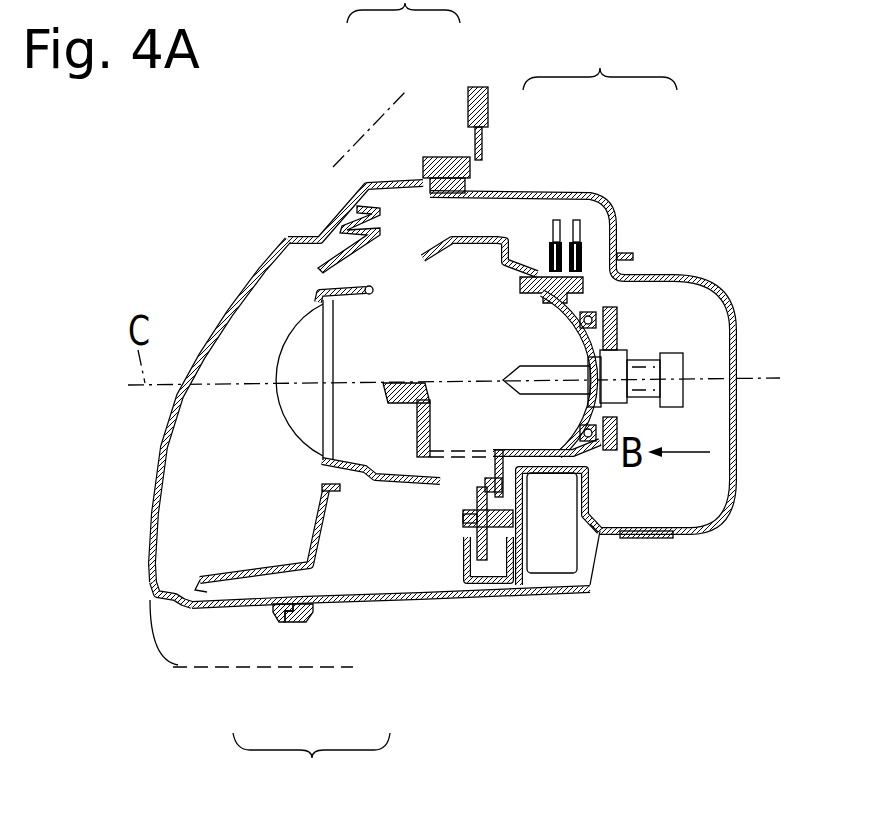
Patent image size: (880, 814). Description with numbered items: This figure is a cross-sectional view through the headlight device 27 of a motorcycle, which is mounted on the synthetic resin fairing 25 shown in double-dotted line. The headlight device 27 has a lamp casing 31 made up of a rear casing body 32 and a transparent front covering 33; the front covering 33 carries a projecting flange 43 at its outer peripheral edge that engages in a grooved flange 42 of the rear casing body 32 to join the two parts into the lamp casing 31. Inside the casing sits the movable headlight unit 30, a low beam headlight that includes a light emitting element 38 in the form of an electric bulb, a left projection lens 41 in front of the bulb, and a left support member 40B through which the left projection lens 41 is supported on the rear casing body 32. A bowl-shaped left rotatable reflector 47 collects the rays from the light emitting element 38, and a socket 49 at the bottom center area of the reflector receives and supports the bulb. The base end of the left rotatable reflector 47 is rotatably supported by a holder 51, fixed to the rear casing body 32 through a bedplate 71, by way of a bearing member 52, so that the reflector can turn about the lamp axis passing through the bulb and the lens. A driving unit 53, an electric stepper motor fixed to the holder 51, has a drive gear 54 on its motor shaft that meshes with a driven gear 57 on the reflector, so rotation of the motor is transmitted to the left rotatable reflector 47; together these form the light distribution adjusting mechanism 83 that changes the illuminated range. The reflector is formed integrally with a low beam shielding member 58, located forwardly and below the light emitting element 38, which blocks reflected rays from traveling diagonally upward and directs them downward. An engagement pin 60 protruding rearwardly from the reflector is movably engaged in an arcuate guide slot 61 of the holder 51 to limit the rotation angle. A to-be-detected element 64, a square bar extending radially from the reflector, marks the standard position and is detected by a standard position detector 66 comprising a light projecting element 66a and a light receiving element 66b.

The fairing 25 is at (290, 236).
The headlight device 27 is at (634, 240).
The movable headlight unit 30 is at (292, 440).
The lamp casing 31 is at (311, 769).
The rear casing body 32 is at (432, 602).
The front covering 33 is at (193, 613).
The light emitting element 38 is at (555, 372).
The left support member 40B is at (407, 482).
The left projection lens 41 is at (292, 401).
The grooved flange 42 is at (313, 613).
The projecting flange 43 is at (272, 615).
The left rotatable reflector 47 is at (497, 262).
The socket 49 is at (647, 372).
The holder 51 is at (605, 436).
The bearing member 52 is at (597, 452).
The driving unit 53 is at (550, 556).
The drive gear 54 is at (492, 552).
The driven gear 57 is at (492, 490).
The low beam shielding member 58 is at (405, 388).
The engagement pin 60 is at (650, 536).
The arcuate guide slot 61 is at (602, 532).
The to-be-detected element 64 is at (598, 288).
The standard position detector 66 is at (600, 144).
The light projecting element 66a is at (548, 268).
The light receiving element 66b is at (603, 268).
The bedplate 71 is at (338, 256).
The light distribution adjusting mechanism 83 is at (583, 517).